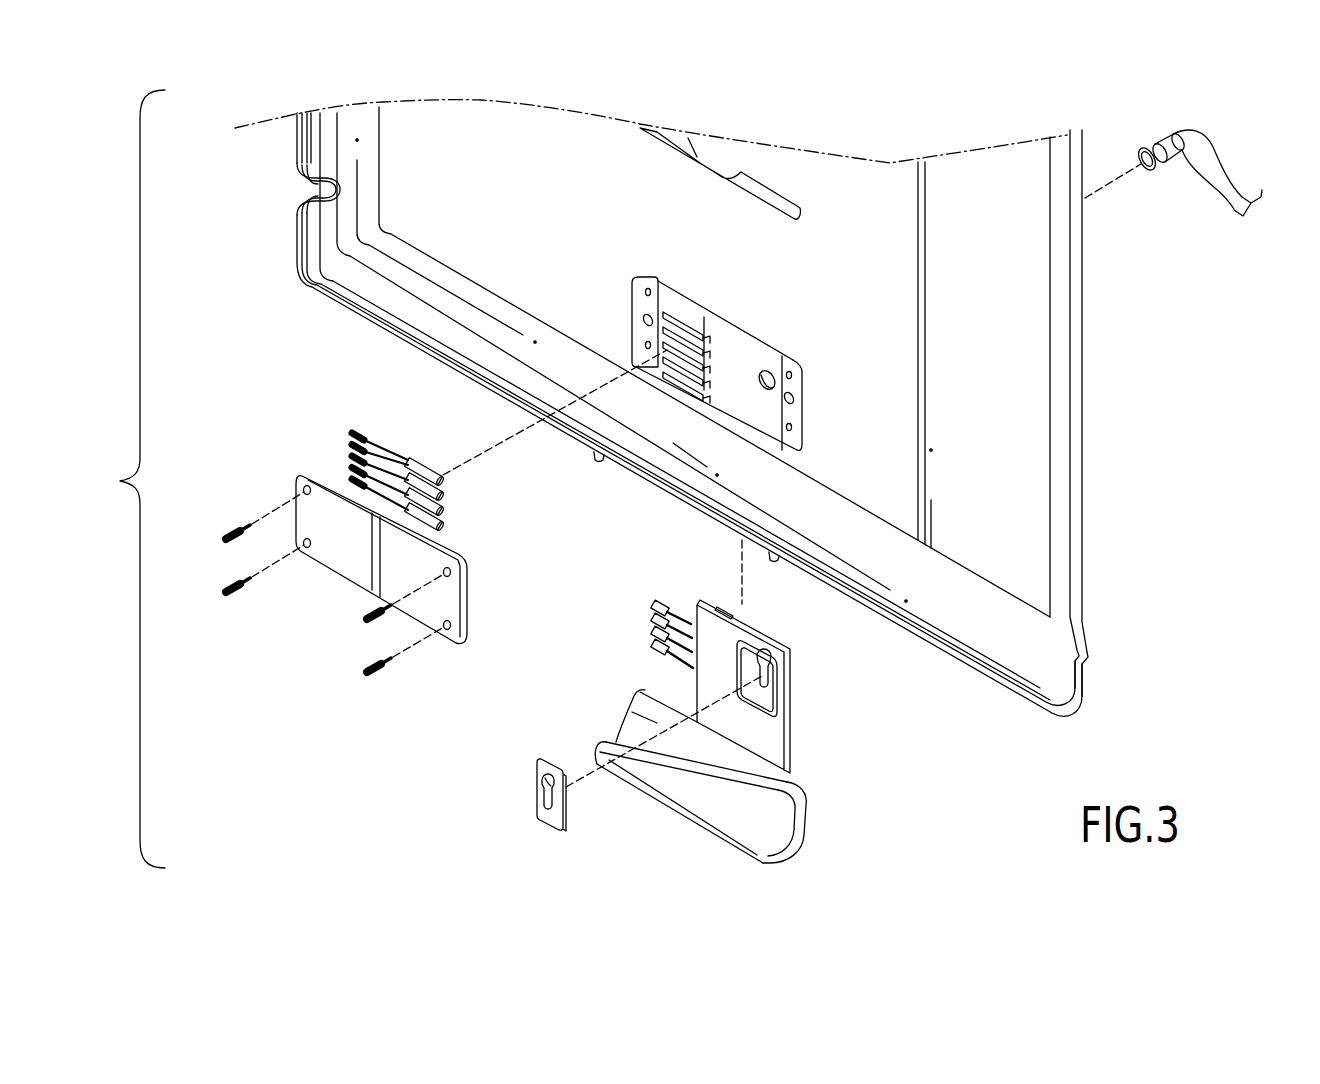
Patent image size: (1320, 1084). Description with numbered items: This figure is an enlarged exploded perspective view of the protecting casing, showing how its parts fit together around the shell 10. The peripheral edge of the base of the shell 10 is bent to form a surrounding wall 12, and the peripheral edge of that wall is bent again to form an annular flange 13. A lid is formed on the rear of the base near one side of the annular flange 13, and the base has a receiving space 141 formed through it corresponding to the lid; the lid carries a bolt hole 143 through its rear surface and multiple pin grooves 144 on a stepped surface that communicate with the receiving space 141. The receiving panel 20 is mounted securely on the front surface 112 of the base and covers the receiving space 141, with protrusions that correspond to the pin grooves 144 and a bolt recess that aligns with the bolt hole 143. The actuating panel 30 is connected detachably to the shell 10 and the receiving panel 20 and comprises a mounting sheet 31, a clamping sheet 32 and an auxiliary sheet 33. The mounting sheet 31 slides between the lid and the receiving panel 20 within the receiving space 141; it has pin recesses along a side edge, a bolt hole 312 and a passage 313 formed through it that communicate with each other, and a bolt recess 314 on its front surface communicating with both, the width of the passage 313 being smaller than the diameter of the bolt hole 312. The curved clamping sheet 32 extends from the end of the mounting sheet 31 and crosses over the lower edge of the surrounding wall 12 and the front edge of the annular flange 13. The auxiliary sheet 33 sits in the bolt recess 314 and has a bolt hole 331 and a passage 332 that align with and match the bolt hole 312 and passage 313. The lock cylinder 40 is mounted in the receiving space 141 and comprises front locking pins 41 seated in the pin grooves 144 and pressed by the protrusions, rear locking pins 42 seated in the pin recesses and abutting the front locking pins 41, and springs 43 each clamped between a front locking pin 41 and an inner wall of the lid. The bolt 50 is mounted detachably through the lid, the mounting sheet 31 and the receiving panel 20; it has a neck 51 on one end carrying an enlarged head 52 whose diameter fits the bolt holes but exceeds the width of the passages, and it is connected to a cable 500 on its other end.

The shell 10 is at (1097, 346).
The front surface 112 is at (1035, 432).
The surrounding wall 12 is at (333, 255).
The annular flange 13 is at (297, 137).
The receiving space 141 is at (708, 358).
The bolt hole 143 is at (769, 382).
The pin grooves 144 is at (677, 316).
The receiving panel 20 is at (338, 572).
The actuating panel 30 is at (678, 734).
The mounting sheet 31 is at (784, 686).
The bolt hole 312 is at (762, 660).
The passage 313 is at (768, 686).
The bolt recess 314 is at (772, 700).
The clamping sheet 32 is at (783, 826).
The auxiliary sheet 33 is at (611, 772).
The bolt hole 331 is at (546, 777).
The passage 332 is at (548, 805).
The lock cylinder 40 is at (469, 440).
The front locking pins 41 is at (430, 465).
The rear locking pins 42 is at (665, 604).
The springs 43 is at (375, 433).
The bolt 50 is at (1147, 160).
The neck 51 is at (1146, 147).
The enlarged head 52 is at (1147, 171).
The cable 500 is at (1233, 197).